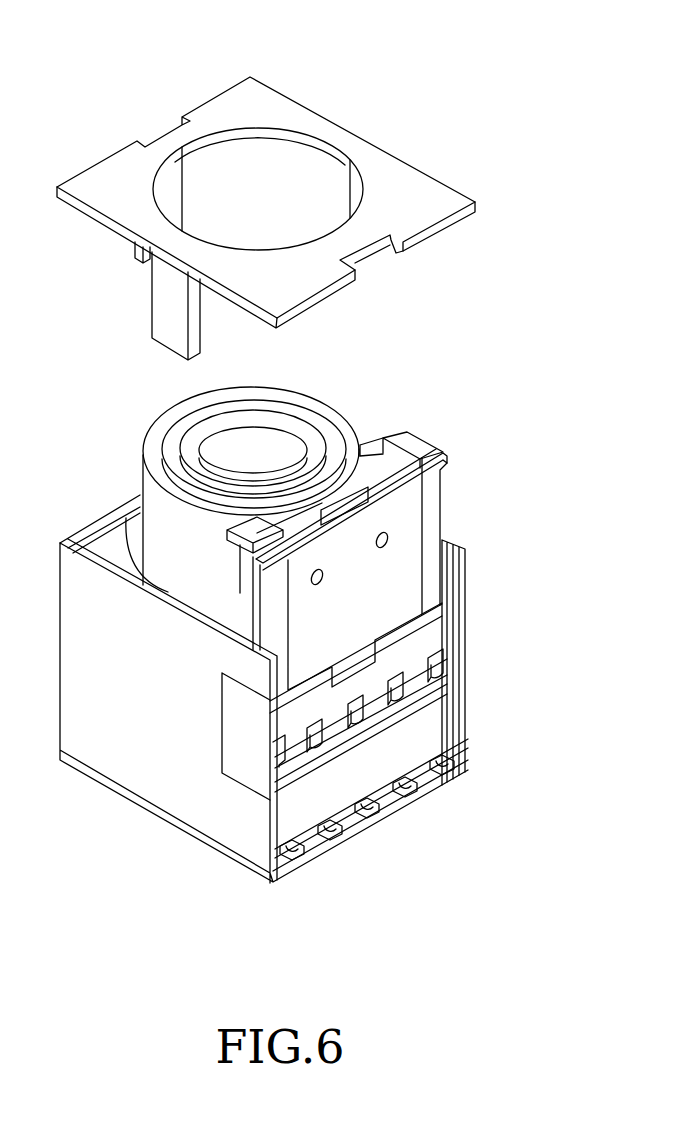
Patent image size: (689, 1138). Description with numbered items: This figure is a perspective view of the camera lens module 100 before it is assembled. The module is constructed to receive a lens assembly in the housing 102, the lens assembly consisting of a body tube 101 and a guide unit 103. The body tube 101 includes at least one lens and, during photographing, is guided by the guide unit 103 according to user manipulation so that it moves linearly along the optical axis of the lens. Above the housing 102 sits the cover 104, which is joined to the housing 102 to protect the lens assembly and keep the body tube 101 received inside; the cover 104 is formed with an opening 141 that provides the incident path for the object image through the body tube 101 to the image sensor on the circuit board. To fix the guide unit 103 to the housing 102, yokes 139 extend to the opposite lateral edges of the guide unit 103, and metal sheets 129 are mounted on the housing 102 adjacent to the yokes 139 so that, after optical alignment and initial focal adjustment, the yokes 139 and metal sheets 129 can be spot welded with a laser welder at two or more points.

The camera lens module 100 is at (91, 57).
The body tube 101 is at (128, 448).
The housing 102 is at (472, 573).
The guide unit 103 is at (453, 463).
The cover 104 is at (378, 134).
The metal sheets 129 is at (467, 633).
The yokes 139 is at (440, 509).
The opening 141 is at (300, 147).